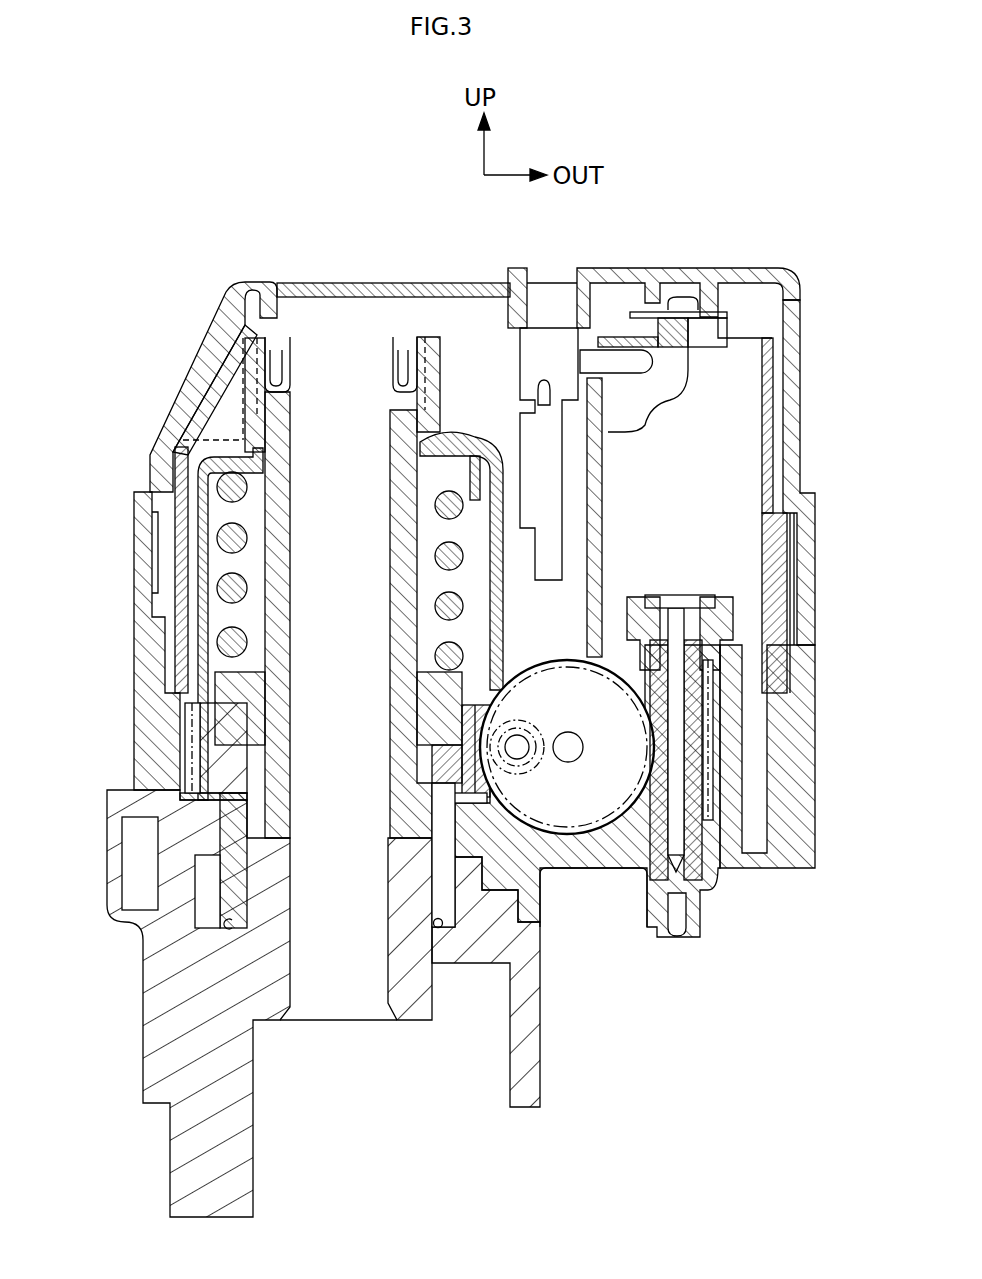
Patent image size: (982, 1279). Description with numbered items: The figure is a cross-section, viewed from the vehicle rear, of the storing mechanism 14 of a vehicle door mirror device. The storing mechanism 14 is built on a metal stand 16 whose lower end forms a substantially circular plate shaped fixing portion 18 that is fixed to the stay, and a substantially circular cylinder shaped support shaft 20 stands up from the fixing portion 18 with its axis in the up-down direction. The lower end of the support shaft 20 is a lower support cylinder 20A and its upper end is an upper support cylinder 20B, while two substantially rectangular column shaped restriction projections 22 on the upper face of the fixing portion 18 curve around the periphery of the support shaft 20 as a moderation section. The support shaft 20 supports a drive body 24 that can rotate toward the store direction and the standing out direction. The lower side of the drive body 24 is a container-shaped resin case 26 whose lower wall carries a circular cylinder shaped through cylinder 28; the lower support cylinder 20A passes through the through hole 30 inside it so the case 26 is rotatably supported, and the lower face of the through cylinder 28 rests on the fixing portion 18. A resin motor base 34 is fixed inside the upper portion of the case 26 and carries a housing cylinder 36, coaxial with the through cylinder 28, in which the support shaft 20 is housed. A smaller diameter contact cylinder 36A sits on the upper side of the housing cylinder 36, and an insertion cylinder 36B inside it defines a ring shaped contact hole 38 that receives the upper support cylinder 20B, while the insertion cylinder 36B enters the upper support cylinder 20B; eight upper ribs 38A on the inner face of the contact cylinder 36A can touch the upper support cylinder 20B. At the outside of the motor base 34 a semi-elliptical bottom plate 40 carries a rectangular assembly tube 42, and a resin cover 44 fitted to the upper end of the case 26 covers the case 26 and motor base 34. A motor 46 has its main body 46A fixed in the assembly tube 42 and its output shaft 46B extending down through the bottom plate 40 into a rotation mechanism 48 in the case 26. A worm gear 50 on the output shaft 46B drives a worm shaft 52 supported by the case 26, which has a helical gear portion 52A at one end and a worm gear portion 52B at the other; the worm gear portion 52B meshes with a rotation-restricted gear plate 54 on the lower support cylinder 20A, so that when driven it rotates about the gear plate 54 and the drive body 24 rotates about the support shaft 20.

The storing mechanism 14 is at (456, 678).
The stand 16 is at (143, 1005).
The fixing portion 18 is at (542, 948).
The support shaft 20 is at (425, 418).
The lower support cylinder 20A is at (245, 836).
The upper support cylinder 20B is at (272, 338).
The restriction projections 22 is at (240, 842).
The drive body 24 is at (207, 306).
The case 26 is at (127, 690).
The through cylinder 28 is at (215, 905).
The through hole 30 is at (437, 928).
The motor base 34 is at (740, 628).
The housing cylinder 36 is at (175, 567).
The contact cylinder 36A is at (456, 297).
The insertion cylinder 36B is at (397, 348).
The contact hole 38 is at (283, 355).
The upper ribs 38A is at (417, 378).
The bottom plate 40 is at (625, 628).
The assembly tube 42 is at (783, 378).
The cover 44 is at (724, 268).
The motor 46 is at (768, 430).
The main body 46A is at (770, 470).
The output shaft 46B is at (705, 600).
The rotation mechanism 48 is at (624, 845).
The worm gear 50 is at (712, 750).
The worm shaft 52 is at (550, 845).
The helical gear portion 52A is at (588, 838).
The worm gear portion 52B is at (560, 725).
The gear plate 54 is at (185, 738).